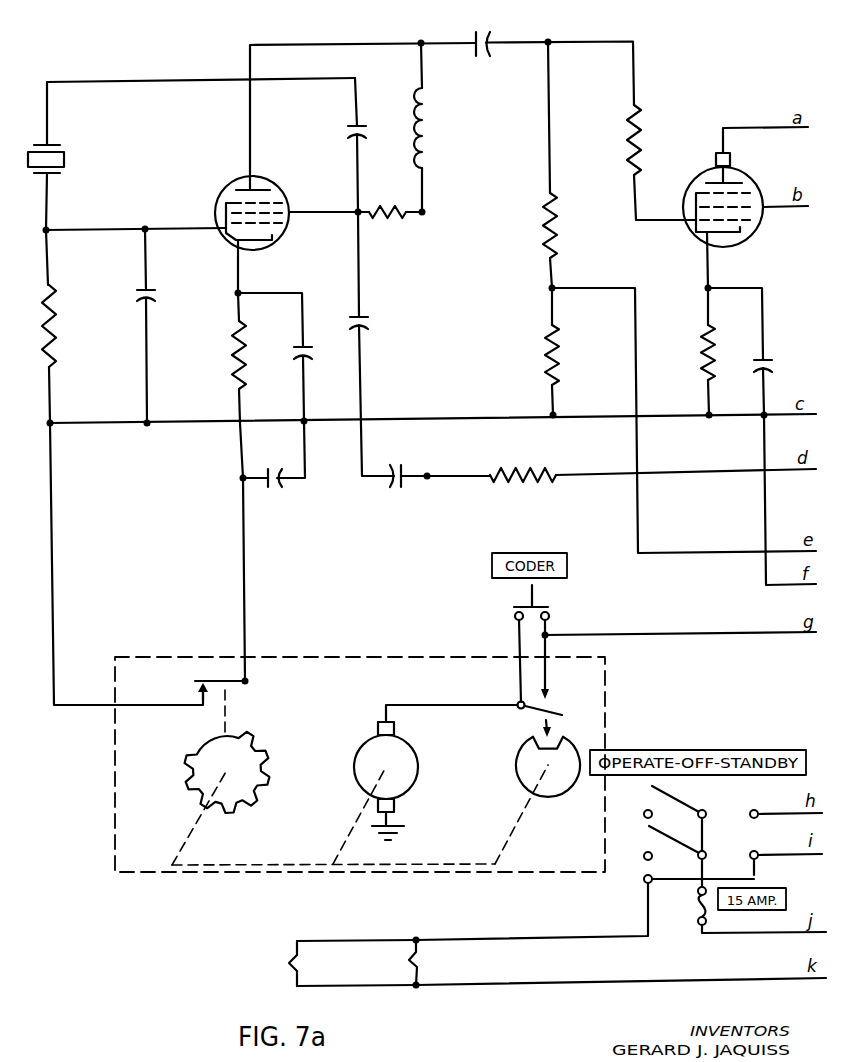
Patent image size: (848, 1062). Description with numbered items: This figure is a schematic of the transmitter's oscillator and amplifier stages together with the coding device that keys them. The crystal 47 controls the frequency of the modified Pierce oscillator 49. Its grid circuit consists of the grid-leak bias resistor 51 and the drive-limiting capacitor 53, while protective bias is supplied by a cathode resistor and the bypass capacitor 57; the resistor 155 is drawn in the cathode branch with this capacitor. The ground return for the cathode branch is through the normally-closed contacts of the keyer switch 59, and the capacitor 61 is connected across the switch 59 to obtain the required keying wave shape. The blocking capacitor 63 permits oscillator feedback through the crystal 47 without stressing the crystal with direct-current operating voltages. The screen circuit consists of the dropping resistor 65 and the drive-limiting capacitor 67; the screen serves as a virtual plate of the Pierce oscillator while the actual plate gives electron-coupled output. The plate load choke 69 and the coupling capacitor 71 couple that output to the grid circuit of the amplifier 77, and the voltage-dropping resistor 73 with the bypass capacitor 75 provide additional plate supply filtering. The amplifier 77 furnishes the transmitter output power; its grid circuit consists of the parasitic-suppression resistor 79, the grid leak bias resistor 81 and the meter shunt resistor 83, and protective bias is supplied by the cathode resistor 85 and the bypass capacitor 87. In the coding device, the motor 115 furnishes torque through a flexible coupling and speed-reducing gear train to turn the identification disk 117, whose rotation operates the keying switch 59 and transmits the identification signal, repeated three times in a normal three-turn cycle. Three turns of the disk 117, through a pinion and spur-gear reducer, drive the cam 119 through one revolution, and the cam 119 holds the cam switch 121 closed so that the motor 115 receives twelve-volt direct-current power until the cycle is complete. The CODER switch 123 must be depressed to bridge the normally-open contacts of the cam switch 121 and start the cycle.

The crystal 47 is at (66, 158).
The modified Pierce oscillator 49 is at (226, 186).
The grid-leak bias resistor 51 is at (58, 318).
The drive-limiting capacitor 53 is at (152, 300).
The resistor 155 is at (245, 366).
The bypass capacitor 57 is at (306, 346).
The keyer switch 59 is at (205, 679).
The capacitor 61 is at (263, 488).
The blocking capacitor 63 is at (350, 125).
The dropping resistor 65 is at (381, 207).
The drive-limiting capacitor 67 is at (366, 322).
The plate load choke 69 is at (427, 138).
The coupling capacitor 71 is at (487, 36).
The voltage-dropping resistor 73 is at (522, 483).
The bypass capacitor 75 is at (400, 485).
The amplifier 77 is at (700, 168).
The parasitic-suppression resistor 79 is at (626, 125).
The grid leak bias resistor 81 is at (560, 228).
The meter shunt resistor 83 is at (562, 338).
The cathode resistor 85 is at (698, 338).
The bypass capacitor 87 is at (775, 362).
The motor 115 is at (414, 752).
The identification disk 117 is at (262, 738).
The cam 119 is at (556, 800).
The cam switch 121 is at (552, 712).
The CODER switch 123 is at (548, 606).